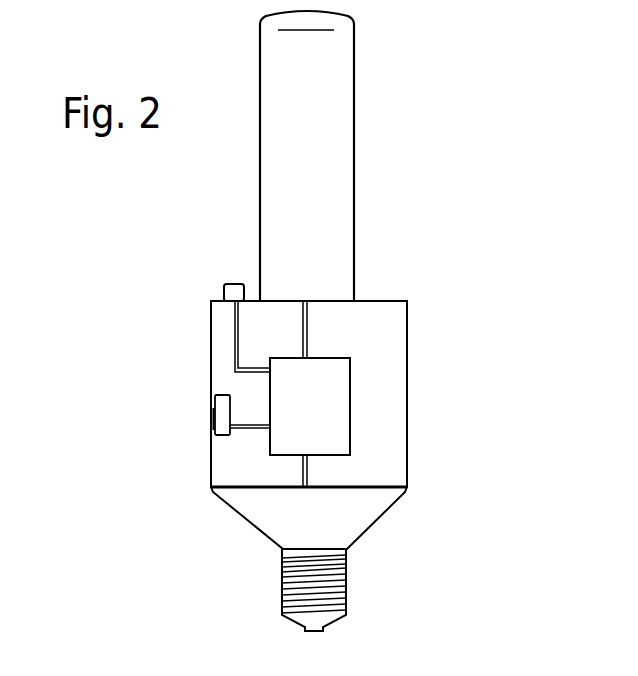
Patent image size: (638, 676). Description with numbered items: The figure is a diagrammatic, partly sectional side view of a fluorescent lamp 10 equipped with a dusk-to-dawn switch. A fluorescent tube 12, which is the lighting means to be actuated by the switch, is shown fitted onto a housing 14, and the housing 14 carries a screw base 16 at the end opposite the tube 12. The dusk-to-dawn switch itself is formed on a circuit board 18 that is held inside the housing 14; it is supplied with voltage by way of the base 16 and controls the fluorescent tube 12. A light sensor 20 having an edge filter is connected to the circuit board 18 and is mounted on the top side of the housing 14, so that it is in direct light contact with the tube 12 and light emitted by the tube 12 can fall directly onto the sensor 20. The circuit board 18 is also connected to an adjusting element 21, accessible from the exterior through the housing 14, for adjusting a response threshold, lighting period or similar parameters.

The fluorescent lamp 10 is at (233, 507).
The fluorescent tube 12 is at (338, 162).
The housing 14 is at (390, 358).
The screw base 16 is at (343, 570).
The circuit board 18 is at (338, 434).
The light sensor 20 is at (228, 292).
The adjusting element 21 is at (222, 422).